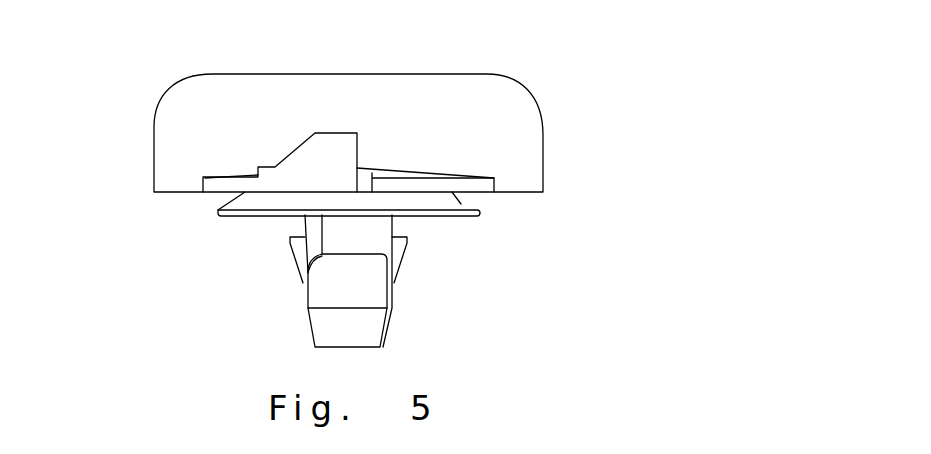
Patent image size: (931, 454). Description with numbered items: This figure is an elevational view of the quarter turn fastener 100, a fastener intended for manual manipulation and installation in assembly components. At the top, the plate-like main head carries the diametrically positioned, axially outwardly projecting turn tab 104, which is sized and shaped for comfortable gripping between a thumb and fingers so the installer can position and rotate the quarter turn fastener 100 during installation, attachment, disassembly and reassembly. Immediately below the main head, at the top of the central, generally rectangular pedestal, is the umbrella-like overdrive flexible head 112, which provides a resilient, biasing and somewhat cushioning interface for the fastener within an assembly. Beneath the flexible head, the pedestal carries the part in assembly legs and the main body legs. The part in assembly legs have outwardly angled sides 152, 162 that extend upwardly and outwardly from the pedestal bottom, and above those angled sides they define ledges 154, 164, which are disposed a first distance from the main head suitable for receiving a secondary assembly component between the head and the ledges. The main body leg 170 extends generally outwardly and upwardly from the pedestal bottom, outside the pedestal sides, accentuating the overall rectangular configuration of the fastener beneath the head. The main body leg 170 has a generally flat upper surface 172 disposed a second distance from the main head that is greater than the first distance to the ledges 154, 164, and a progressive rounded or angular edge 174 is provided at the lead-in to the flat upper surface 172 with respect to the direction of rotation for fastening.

The quarter turn fastener 100 is at (142, 112).
The turn tab 104 is at (517, 102).
The overdrive flexible head 112 is at (462, 204).
The outwardly angled side 152 is at (405, 247).
The ledge 154 is at (406, 238).
The outwardly angled side 162 is at (292, 250).
The ledge 164 is at (300, 237).
The main body leg 170 is at (333, 295).
The flat upper surface 172 is at (362, 252).
The rounded or angular edge 174 is at (308, 257).